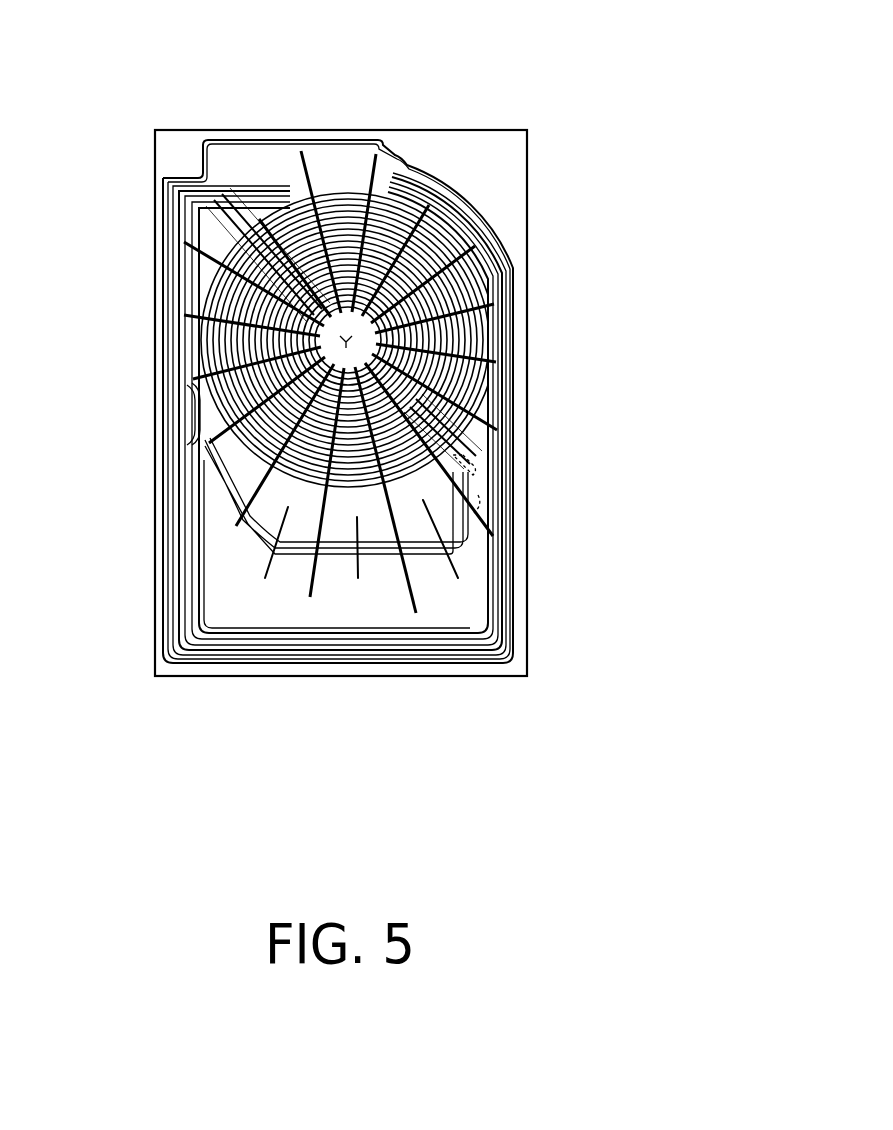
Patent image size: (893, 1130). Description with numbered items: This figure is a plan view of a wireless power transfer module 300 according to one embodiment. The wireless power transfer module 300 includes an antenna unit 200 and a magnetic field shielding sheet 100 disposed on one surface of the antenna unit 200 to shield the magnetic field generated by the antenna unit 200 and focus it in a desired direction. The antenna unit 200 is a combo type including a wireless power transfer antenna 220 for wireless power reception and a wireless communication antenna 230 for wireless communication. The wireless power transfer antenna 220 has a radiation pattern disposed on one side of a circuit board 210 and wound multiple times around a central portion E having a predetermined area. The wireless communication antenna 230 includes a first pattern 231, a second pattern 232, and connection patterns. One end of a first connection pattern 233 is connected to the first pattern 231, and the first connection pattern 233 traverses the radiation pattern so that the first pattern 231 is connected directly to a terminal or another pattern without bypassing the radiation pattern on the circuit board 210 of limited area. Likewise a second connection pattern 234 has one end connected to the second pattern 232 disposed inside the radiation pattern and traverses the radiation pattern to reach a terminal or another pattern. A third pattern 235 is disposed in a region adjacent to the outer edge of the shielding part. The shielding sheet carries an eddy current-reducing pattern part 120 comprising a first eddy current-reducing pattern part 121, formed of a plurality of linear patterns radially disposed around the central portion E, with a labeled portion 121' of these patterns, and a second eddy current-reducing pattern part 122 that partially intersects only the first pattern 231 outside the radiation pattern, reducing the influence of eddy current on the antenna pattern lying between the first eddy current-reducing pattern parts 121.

The wireless power transfer module 300 is at (356, 33).
The magnetic field shielding sheet 100 is at (535, 200).
The antenna unit 200 is at (398, 454).
The circuit board 210 is at (357, 401).
The wireless power transfer antenna 220 is at (190, 405).
The wireless communication antenna 230 is at (322, 804).
The first pattern 231 is at (255, 540).
The second pattern 232 is at (185, 343).
The first connection pattern 233 is at (215, 640).
The second connection pattern 234 is at (470, 455).
The third pattern 235 is at (265, 195).
The eddy current-reducing pattern part 120 is at (269, 593).
The first eddy current-reducing pattern part 121 is at (385, 548).
The first slit end 121' is at (541, 496).
The second eddy current-reducing pattern part 122 is at (357, 570).
The central portion E is at (480, 325).